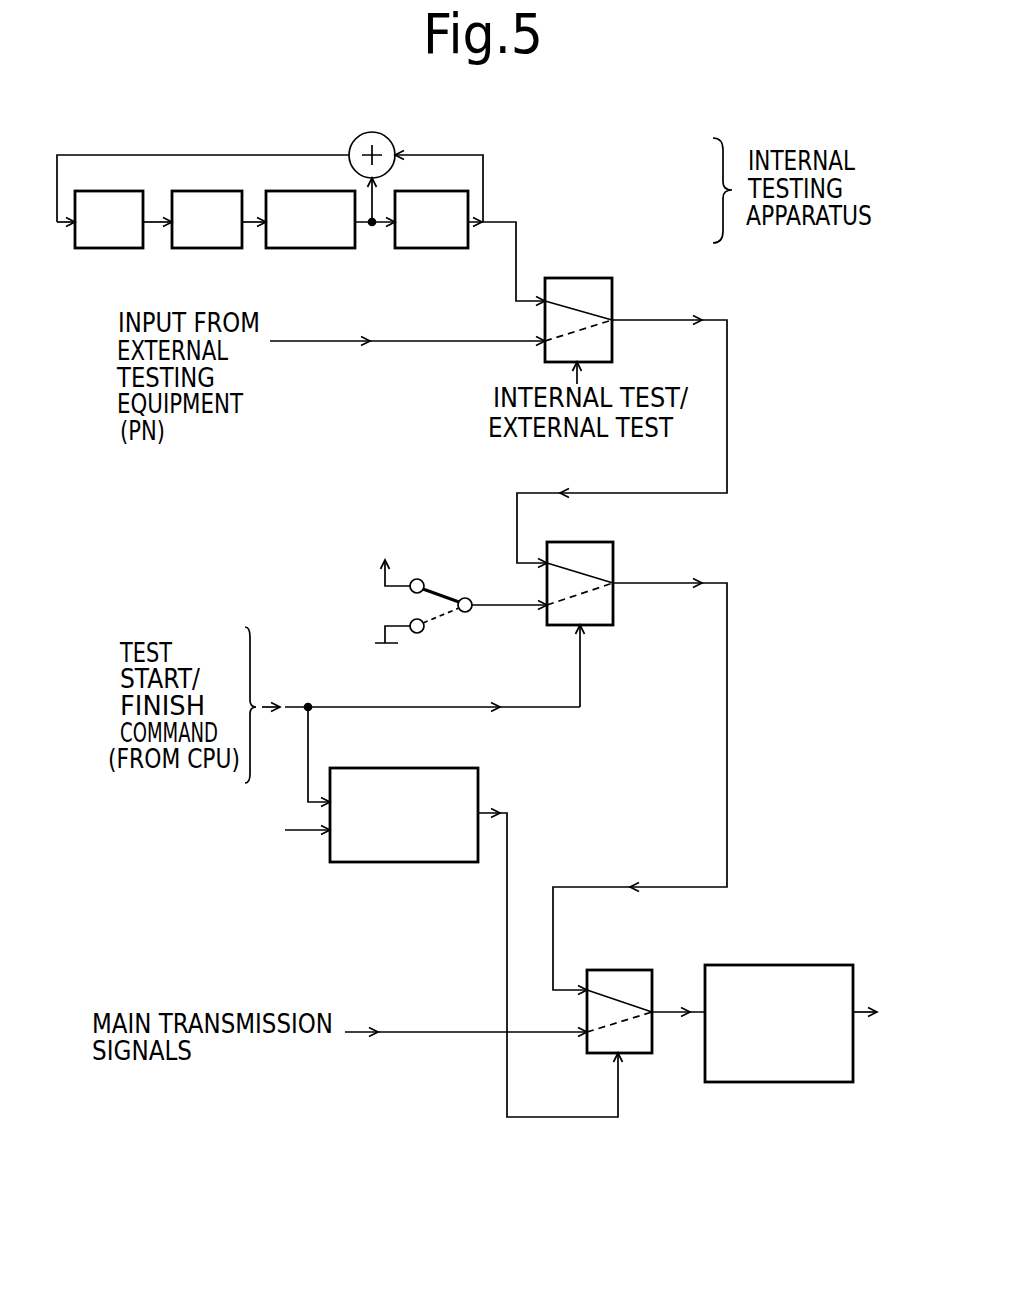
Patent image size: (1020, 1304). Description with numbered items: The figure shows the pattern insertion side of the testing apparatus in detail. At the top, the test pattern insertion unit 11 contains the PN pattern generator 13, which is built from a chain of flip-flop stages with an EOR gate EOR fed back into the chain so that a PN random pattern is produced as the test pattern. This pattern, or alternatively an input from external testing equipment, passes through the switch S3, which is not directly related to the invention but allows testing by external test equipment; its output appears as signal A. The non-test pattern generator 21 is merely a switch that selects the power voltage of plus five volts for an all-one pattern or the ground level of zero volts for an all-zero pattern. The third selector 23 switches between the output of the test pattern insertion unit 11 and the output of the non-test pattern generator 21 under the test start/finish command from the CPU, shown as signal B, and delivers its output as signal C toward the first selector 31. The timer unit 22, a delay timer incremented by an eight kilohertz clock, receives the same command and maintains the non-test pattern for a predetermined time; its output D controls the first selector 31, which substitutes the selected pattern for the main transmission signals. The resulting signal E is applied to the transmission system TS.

The test pattern insertion unit 11 is at (527, 215).
The PN pattern generator 13 is at (253, 188).
The non-test pattern generator 21 is at (456, 553).
The timer unit 22 is at (343, 862).
The third selector 23 is at (613, 553).
The first selector 31 is at (655, 1032).
The switch S3 is at (612, 287).
The EOR gate EOR is at (393, 138).
The transmission system TS is at (787, 965).
The major portion A is at (727, 376).
The major portion B is at (366, 707).
The major portion C is at (727, 720).
The major portion D is at (525, 1117).
The major portion E is at (667, 1008).